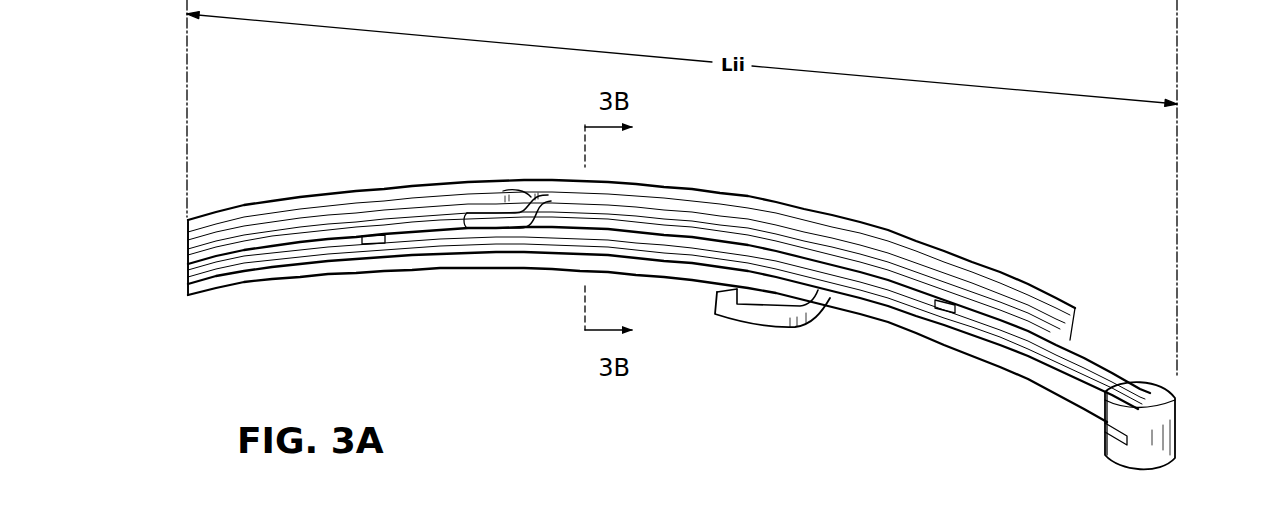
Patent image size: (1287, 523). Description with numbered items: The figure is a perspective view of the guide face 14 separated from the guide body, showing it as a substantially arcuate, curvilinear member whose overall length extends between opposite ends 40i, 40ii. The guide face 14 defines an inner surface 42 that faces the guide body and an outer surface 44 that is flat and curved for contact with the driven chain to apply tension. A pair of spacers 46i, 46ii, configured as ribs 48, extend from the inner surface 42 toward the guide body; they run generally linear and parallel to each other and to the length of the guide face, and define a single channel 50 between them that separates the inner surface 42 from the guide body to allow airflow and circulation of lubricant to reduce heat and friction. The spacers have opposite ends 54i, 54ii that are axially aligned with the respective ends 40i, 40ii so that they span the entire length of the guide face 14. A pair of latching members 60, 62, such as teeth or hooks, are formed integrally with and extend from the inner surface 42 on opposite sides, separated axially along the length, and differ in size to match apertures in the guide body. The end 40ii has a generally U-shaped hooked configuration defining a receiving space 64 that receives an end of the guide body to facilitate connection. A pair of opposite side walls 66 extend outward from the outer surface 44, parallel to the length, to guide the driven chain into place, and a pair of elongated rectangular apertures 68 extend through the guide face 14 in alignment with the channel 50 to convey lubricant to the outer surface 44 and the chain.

The guide face 14 is at (1078, 275).
The end of guide face 40i is at (185, 300).
The end of guide face 40ii is at (1190, 375).
The inner surface 42 is at (928, 268).
The outer surface 44 is at (1100, 325).
The spacer 46i is at (258, 232).
The spacer 46ii is at (330, 247).
The ribs 48 is at (448, 245).
The channel 50 is at (292, 250).
The end of spacer 54i is at (188, 258).
The end of spacer 54ii is at (1175, 398).
The latching member 60 is at (820, 318).
The latching member 62 is at (508, 233).
The receiving space 64 is at (1137, 400).
The side walls 66 is at (822, 205).
The apertures 68 is at (375, 246).